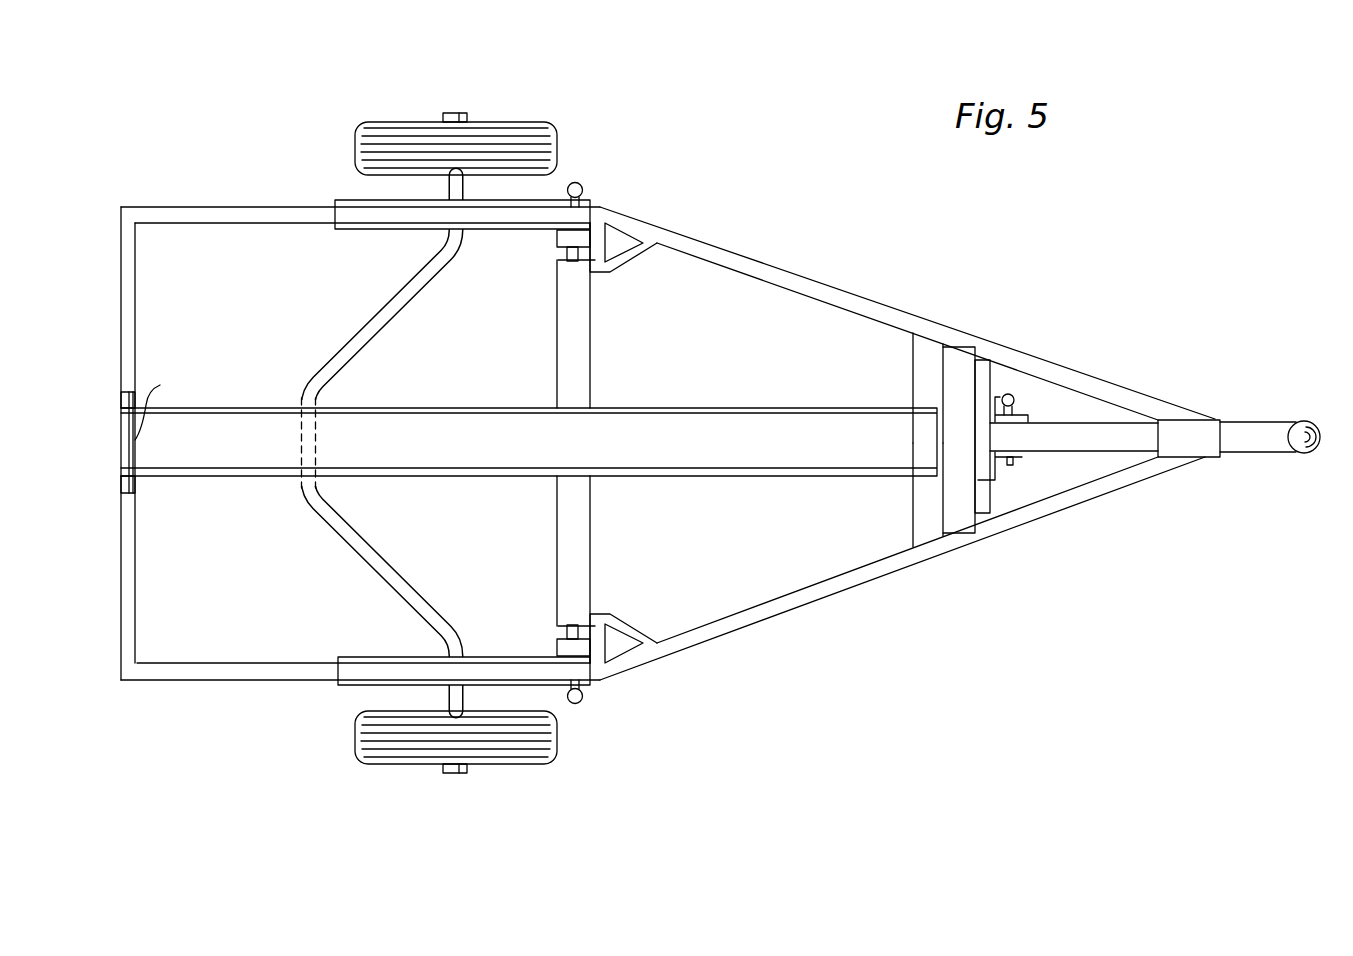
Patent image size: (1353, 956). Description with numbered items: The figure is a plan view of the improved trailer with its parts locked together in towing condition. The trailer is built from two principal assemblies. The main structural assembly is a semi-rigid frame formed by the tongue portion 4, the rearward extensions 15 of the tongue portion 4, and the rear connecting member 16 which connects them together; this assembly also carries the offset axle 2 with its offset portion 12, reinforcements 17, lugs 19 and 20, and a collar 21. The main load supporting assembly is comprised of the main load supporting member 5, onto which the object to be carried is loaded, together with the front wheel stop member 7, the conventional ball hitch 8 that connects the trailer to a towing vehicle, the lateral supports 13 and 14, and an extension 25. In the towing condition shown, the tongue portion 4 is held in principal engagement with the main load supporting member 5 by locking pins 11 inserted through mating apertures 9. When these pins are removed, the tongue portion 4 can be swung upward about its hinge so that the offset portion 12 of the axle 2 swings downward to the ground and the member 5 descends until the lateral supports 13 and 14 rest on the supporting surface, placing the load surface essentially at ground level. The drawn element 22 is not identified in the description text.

The offset axle 2 is at (368, 318).
The tongue portion 4 is at (805, 282).
The main load-supporting member 5 is at (435, 430).
The front wheel stop member 7 is at (946, 418).
The hitch 8 is at (1303, 421).
The apertures 9 is at (557, 240).
The locking pins 11 is at (586, 190).
The offset portion of axle 12 is at (298, 392).
The lateral support 13 is at (580, 340).
The lateral support 14 is at (915, 502).
The rearward extensions 15 is at (262, 207).
The rear connecting member 16 is at (121, 340).
The reinforcement 17 is at (625, 255).
The lug 19 is at (565, 262).
The lug 20 is at (1043, 406).
The collar 21 is at (1192, 428).
The upper cross member 22 is at (915, 372).
The extension 25 is at (1245, 452).